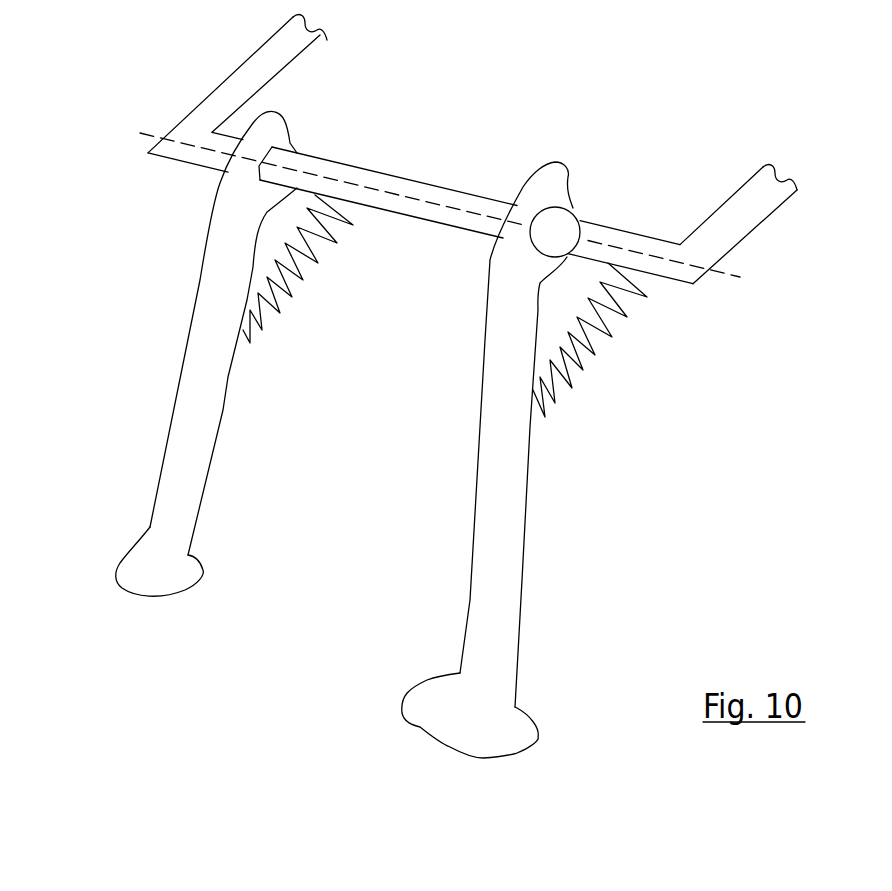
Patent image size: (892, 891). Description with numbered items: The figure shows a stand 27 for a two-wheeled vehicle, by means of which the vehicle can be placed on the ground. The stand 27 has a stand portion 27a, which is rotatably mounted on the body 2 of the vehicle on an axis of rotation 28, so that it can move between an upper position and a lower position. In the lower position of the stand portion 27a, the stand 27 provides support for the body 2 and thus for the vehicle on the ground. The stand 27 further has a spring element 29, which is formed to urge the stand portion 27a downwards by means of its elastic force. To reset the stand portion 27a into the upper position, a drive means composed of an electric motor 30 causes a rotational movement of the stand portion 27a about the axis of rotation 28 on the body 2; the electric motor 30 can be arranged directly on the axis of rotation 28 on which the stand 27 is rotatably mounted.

The body 2 is at (747, 210).
The axis of rotation 28 is at (172, 130).
The stand 27 is at (387, 434).
The stand portion 27a is at (200, 387).
The spring element 29 is at (300, 283).
The electric motor 30 is at (565, 223).